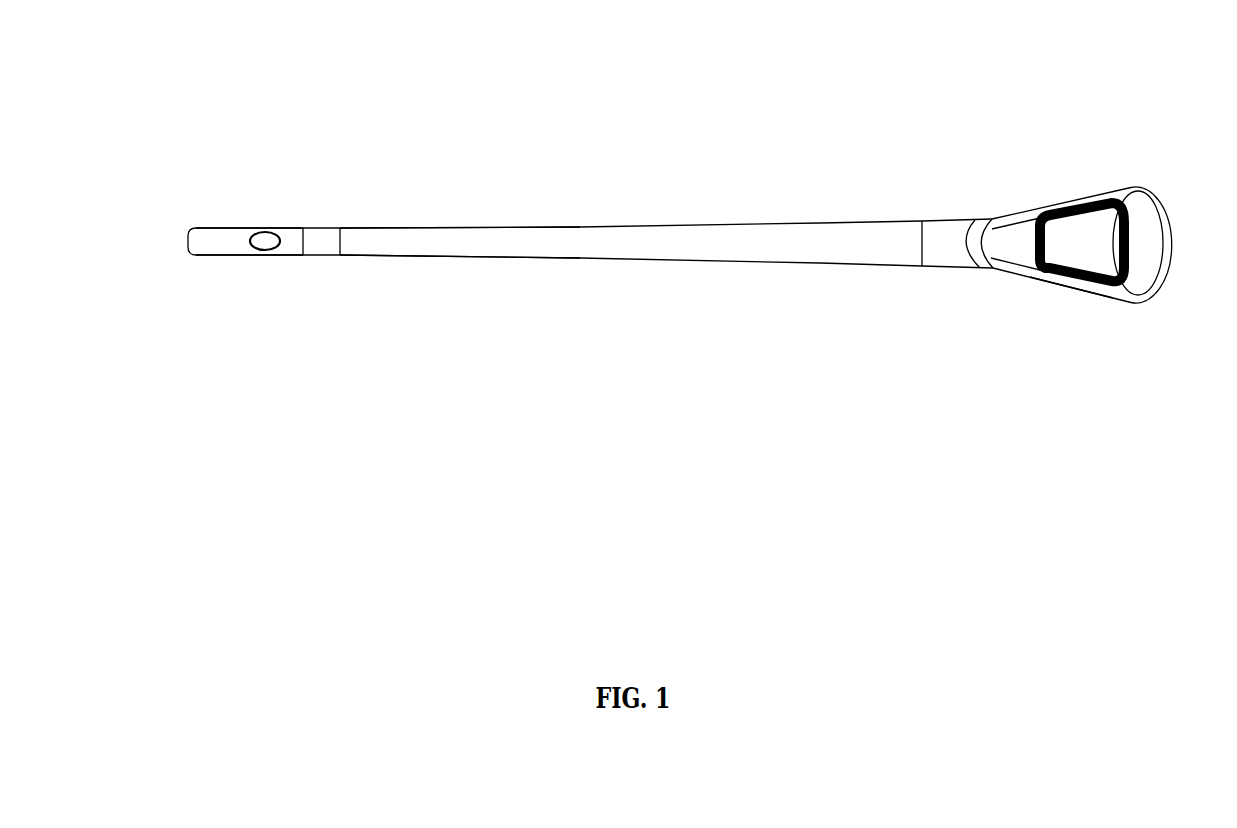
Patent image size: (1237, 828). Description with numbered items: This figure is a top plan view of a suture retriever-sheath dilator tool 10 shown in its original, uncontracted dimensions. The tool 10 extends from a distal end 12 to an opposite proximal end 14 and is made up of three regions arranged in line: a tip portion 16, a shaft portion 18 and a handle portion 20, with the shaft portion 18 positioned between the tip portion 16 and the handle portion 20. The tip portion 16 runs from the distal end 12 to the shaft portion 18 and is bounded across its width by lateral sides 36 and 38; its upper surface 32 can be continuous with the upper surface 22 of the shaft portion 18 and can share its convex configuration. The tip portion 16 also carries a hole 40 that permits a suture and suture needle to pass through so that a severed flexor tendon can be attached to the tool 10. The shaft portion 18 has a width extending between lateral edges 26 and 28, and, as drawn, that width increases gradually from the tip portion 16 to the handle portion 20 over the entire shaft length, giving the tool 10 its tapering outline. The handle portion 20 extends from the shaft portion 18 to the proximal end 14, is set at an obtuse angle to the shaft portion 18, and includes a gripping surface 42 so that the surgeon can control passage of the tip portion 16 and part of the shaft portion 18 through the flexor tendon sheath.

The suture retriever-sheath dilator tool 10 is at (770, 110).
The distal end 12 is at (189, 244).
The proximal end 14 is at (1173, 258).
The tip portion 16 is at (223, 242).
The shaft portion 18 is at (609, 244).
The handle portion 20 is at (1082, 284).
The upper surface 22 is at (731, 250).
The lateral edge 26 is at (465, 228).
The lateral edge 28 is at (490, 258).
The upper surface 32 is at (291, 256).
The lateral side 36 is at (203, 228).
The lateral side 38 is at (207, 255).
The hole 40 is at (267, 231).
The gripping surface 42 is at (1099, 272).